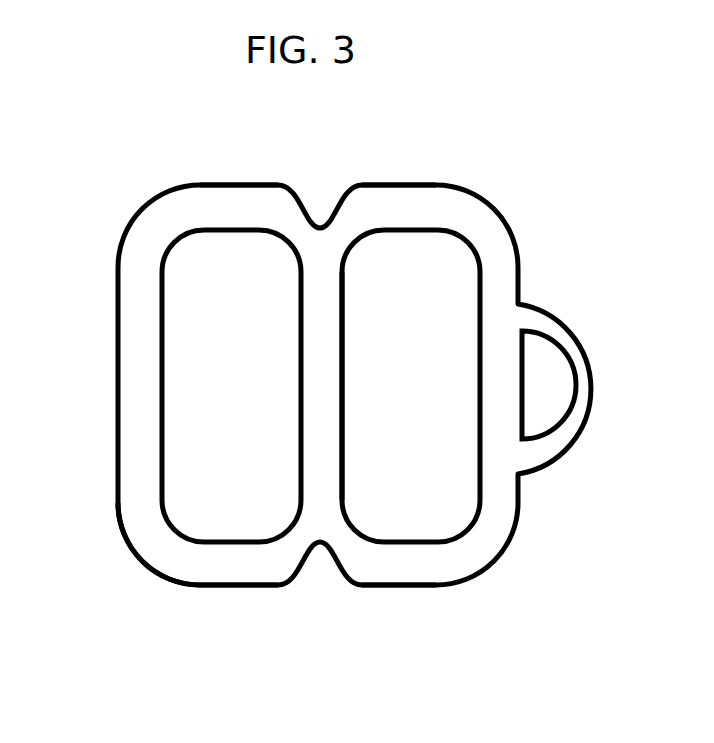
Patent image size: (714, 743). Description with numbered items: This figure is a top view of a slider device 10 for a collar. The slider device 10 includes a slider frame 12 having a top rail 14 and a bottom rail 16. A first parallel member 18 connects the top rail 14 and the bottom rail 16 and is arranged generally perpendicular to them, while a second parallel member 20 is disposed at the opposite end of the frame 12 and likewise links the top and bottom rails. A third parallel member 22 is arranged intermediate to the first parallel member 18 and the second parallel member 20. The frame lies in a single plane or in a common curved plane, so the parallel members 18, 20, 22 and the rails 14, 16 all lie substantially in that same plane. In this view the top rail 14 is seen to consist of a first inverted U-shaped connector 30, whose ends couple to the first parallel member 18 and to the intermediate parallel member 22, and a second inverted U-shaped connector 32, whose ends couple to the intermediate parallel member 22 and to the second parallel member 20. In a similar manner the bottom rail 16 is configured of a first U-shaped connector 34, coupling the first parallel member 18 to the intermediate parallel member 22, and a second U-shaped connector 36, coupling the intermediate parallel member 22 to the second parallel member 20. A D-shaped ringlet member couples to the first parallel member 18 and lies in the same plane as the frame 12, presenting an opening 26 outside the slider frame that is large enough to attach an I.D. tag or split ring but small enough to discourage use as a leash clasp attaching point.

The slider device 10 is at (543, 113).
The slider frame 12 is at (520, 257).
The top rail 14 is at (207, 183).
The bottom rail 16 is at (210, 588).
The first parallel member 18 is at (502, 393).
The second parallel member 20 is at (138, 330).
The third parallel member 22 is at (329, 347).
The opening 26 is at (549, 385).
The first inverted U-shaped connector 30 is at (422, 208).
The second inverted U-shaped connector 32 is at (237, 210).
The first U-shaped connector 34 is at (400, 567).
The second U-shaped connector 36 is at (180, 560).